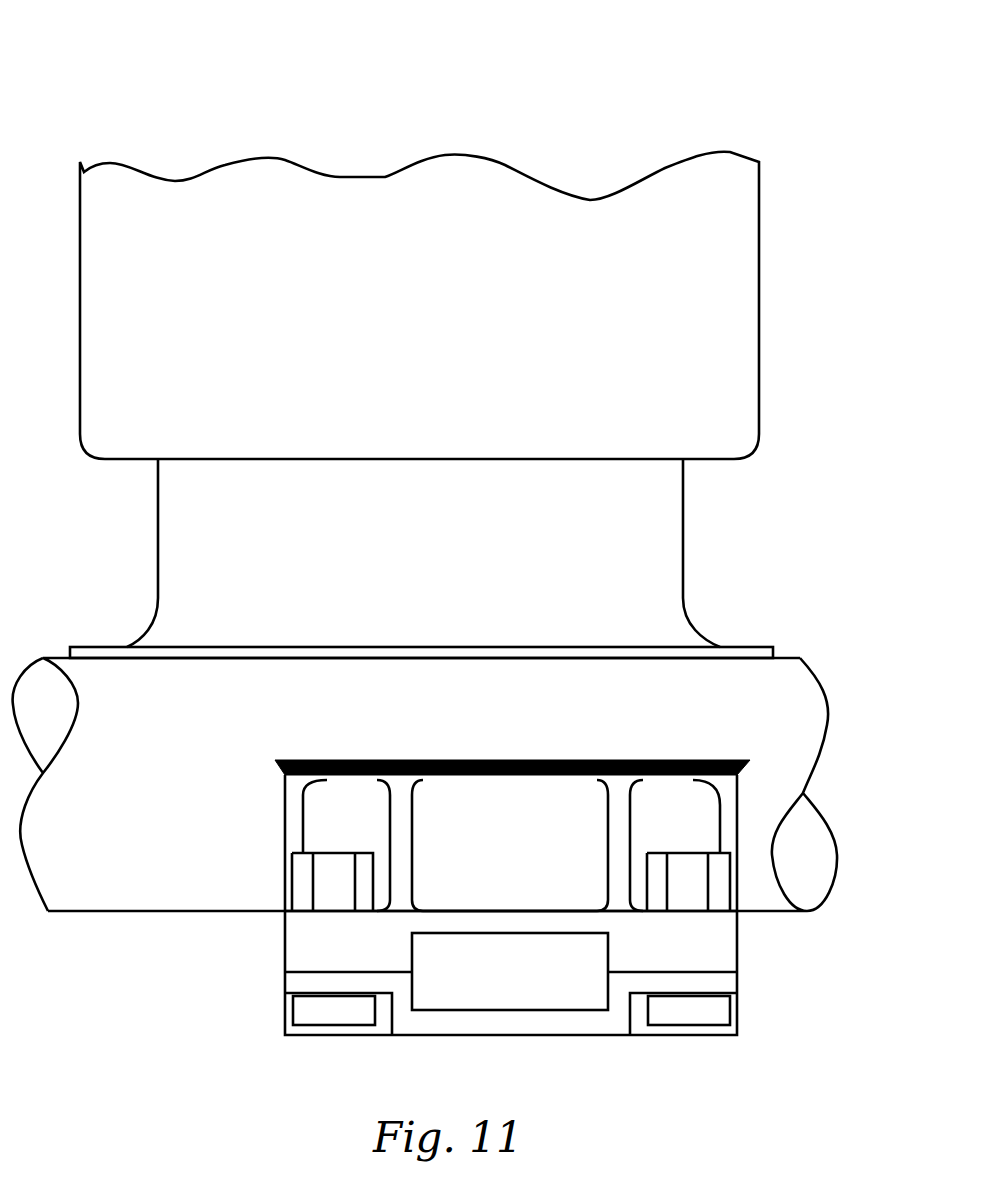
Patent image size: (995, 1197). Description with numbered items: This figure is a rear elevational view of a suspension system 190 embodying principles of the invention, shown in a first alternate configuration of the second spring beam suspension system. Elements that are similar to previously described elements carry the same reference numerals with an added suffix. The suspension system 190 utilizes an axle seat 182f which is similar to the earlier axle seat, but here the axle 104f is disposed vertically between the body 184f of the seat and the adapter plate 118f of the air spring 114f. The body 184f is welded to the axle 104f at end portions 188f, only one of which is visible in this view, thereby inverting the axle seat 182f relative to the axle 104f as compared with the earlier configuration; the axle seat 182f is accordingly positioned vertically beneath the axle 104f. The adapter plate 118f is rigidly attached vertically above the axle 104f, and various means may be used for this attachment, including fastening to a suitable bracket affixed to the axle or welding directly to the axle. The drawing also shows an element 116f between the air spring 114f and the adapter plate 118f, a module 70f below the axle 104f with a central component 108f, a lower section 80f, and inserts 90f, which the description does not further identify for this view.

The suspension system 190 is at (104, 90).
The air spring 114f is at (770, 276).
The neck 116f is at (684, 527).
The adapter plate 118f is at (752, 647).
The axle 104f is at (95, 912).
The sensor module housing 70f is at (523, 931).
The end portions 188f is at (746, 793).
The axle seat 182f is at (270, 839).
The body 184f is at (285, 958).
The central component 108f is at (562, 1012).
The lower housing section 80f is at (750, 1008).
The lower inserts 90f is at (278, 1006).